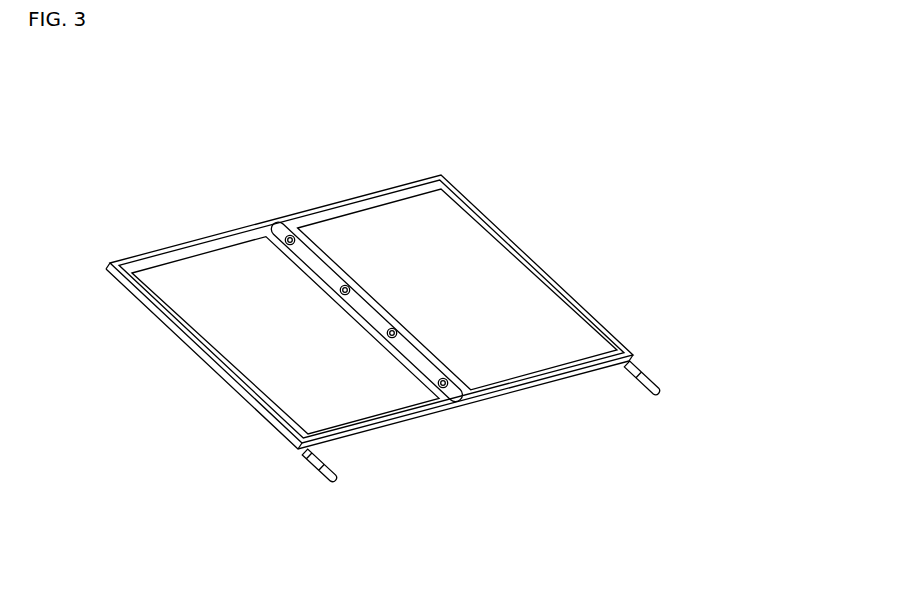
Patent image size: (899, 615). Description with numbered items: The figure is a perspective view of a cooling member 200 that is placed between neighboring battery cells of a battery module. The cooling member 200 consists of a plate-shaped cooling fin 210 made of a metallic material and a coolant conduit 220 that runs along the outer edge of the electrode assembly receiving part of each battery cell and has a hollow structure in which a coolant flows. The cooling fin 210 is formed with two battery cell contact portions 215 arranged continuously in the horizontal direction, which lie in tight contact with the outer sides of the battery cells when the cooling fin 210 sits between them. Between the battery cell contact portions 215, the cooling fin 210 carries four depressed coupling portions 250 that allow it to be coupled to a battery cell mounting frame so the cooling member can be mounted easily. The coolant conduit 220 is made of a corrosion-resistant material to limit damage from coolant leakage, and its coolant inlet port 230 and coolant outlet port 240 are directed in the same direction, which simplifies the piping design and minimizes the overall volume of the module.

The cooling member 200 is at (108, 113).
The cooling fin 210 is at (390, 427).
The battery cell contact portion 215 is at (473, 247).
The coolant conduit 220 is at (247, 397).
The coolant inlet port 230 is at (333, 481).
The coolant outlet port 240 is at (659, 384).
The depressed coupling portion 250 is at (292, 236).